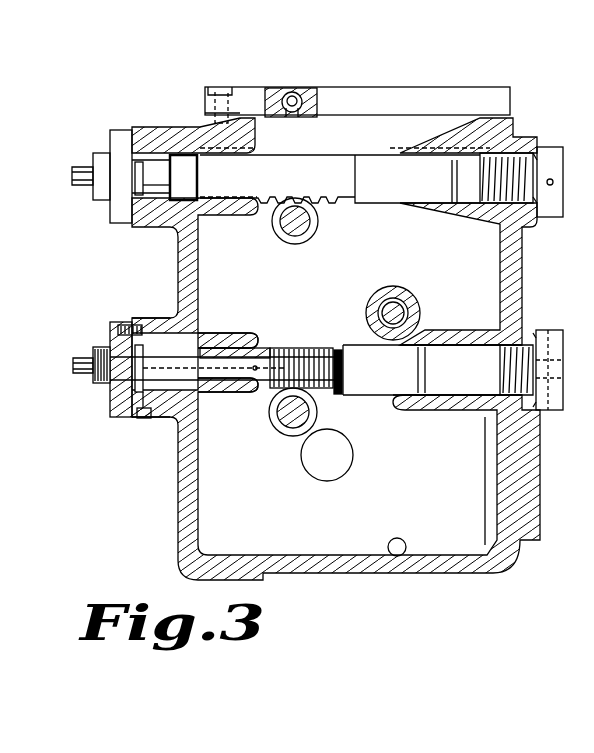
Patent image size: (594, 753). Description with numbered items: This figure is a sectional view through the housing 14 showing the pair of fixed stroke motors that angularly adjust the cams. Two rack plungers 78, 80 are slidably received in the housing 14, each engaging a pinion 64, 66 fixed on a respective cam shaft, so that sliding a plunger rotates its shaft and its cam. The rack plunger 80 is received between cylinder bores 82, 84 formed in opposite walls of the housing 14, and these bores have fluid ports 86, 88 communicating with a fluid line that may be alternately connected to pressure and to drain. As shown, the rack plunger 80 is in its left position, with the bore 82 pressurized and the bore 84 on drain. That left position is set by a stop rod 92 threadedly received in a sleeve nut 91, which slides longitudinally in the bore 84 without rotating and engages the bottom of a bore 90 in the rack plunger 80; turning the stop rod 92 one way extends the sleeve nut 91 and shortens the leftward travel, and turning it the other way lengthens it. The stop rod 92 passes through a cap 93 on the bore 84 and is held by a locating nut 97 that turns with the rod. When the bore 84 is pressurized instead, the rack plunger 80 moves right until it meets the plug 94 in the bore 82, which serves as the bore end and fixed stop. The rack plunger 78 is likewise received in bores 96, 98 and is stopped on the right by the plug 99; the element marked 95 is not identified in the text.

The housing 14 is at (535, 469).
The pinion 64 is at (288, 243).
The pinion 66 is at (286, 432).
The rack plunger 78 is at (330, 183).
The rack plunger 80 is at (382, 377).
The cylinder bore 82 is at (467, 345).
The cylinder bore 84 is at (238, 407).
The fluid port 86 is at (557, 364).
The fluid port 88 is at (148, 418).
The bore 90 is at (254, 345).
The sleeve nut 91 is at (295, 357).
The stop rod 92 is at (287, 331).
The cap 93 is at (110, 403).
The plug 94 is at (510, 340).
The screw 95 is at (158, 193).
The bore 96 is at (480, 217).
The locating nut 97 is at (100, 348).
The bore 98 is at (188, 142).
The plug 99 is at (568, 147).